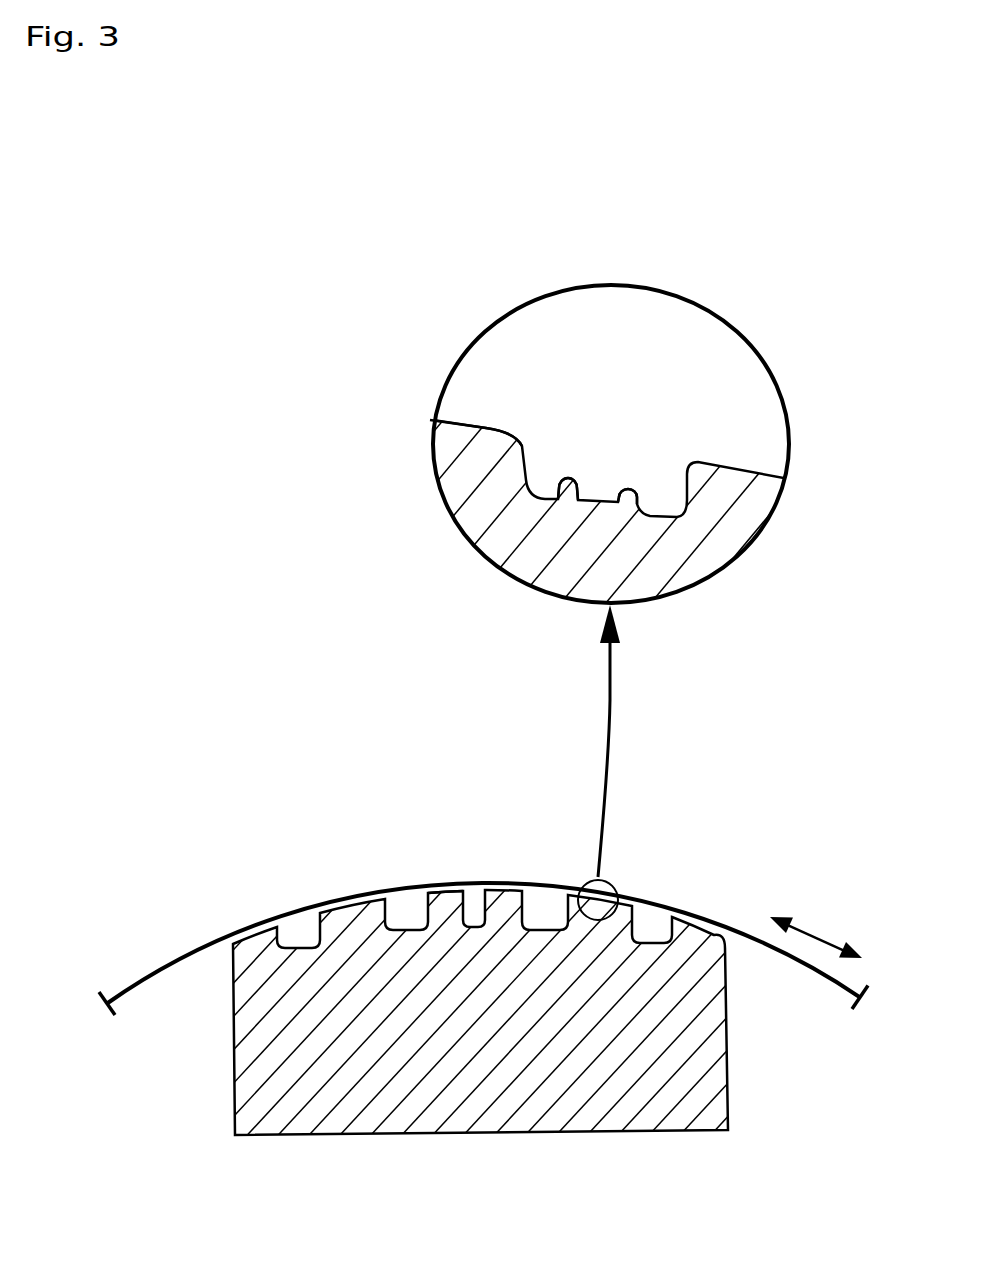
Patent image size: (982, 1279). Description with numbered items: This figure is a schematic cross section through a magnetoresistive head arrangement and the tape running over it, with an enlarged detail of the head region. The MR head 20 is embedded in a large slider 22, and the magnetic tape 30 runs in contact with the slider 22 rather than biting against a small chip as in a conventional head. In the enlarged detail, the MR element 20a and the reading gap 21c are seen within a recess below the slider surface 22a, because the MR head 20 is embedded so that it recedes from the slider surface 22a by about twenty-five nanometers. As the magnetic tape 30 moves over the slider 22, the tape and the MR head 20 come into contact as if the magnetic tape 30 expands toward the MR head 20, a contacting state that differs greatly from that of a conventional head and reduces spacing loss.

The MR head 20 is at (573, 420).
The MR element 20a is at (568, 478).
The reading gap 21c is at (628, 490).
The slider 22 is at (488, 1100).
The slider surface 22a is at (484, 426).
The magnetic tape 30 is at (734, 930).